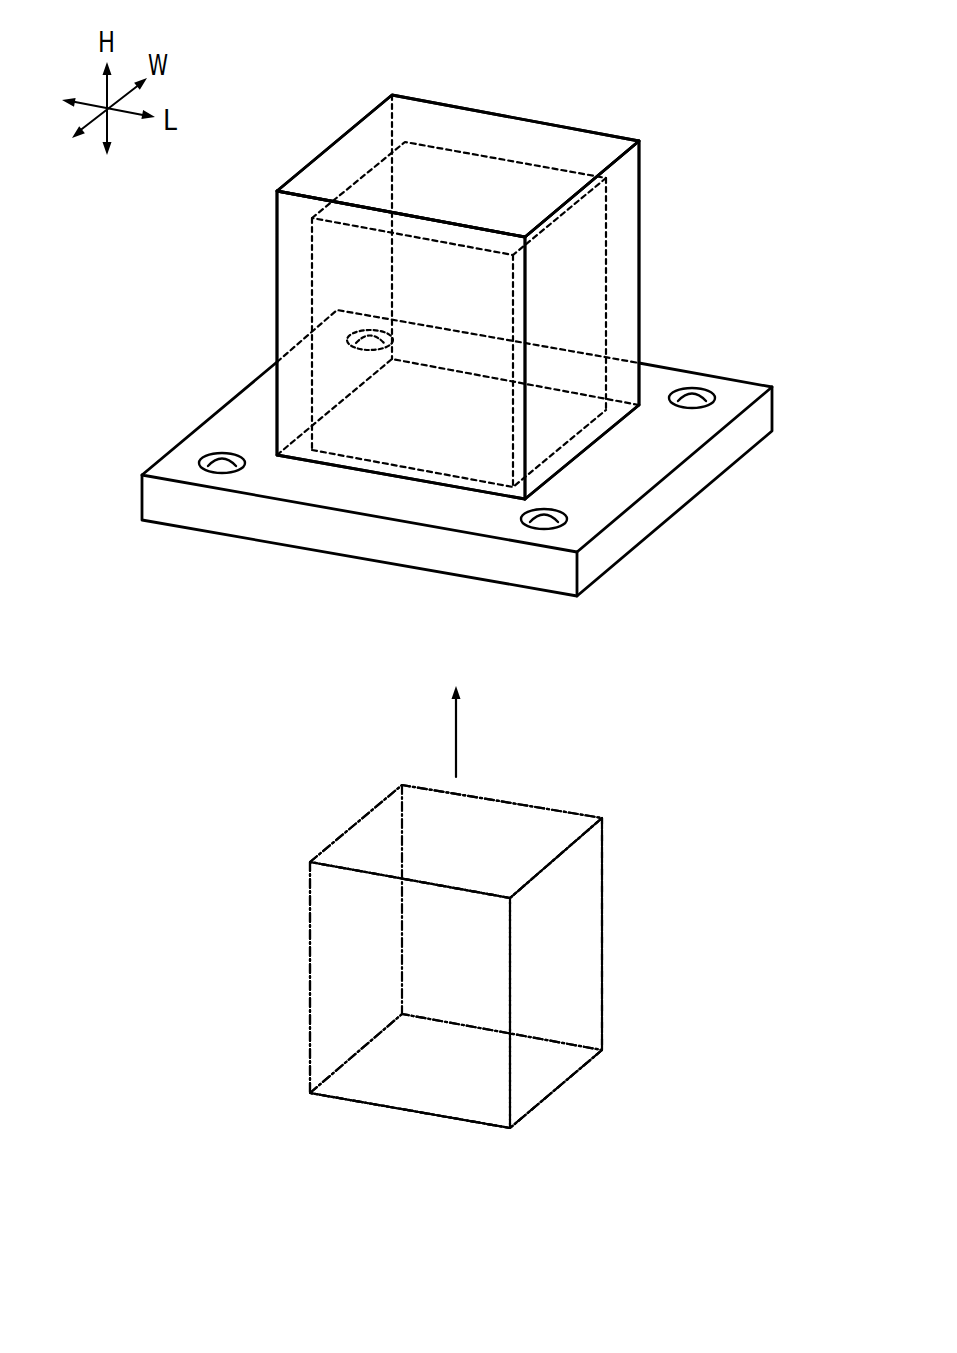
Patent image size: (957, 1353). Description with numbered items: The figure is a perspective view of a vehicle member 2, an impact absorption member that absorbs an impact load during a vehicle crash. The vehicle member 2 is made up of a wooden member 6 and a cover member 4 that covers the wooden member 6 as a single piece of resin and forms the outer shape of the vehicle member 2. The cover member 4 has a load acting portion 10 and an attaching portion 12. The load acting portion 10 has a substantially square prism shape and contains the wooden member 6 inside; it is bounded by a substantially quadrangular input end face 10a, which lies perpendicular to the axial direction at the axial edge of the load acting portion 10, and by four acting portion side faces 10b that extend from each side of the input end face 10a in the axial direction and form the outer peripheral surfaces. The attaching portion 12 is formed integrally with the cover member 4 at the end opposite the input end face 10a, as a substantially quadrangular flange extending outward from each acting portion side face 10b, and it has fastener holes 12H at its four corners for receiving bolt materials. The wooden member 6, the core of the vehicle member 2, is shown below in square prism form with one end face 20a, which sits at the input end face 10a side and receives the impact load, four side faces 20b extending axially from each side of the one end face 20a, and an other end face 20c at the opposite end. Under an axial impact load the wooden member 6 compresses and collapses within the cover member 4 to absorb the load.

The vehicle member 2 is at (620, 97).
The cover member 4 is at (462, 613).
The wooden member 6 is at (578, 262).
The load acting portion 10 is at (641, 178).
The input end face 10a is at (452, 130).
The acting portion side faces 10b is at (338, 172).
The attaching portion 12 is at (661, 381).
The fastener holes 12H is at (196, 460).
The one end face 20a is at (498, 830).
The side faces 20b is at (360, 848).
The other end face 20c is at (435, 1078).